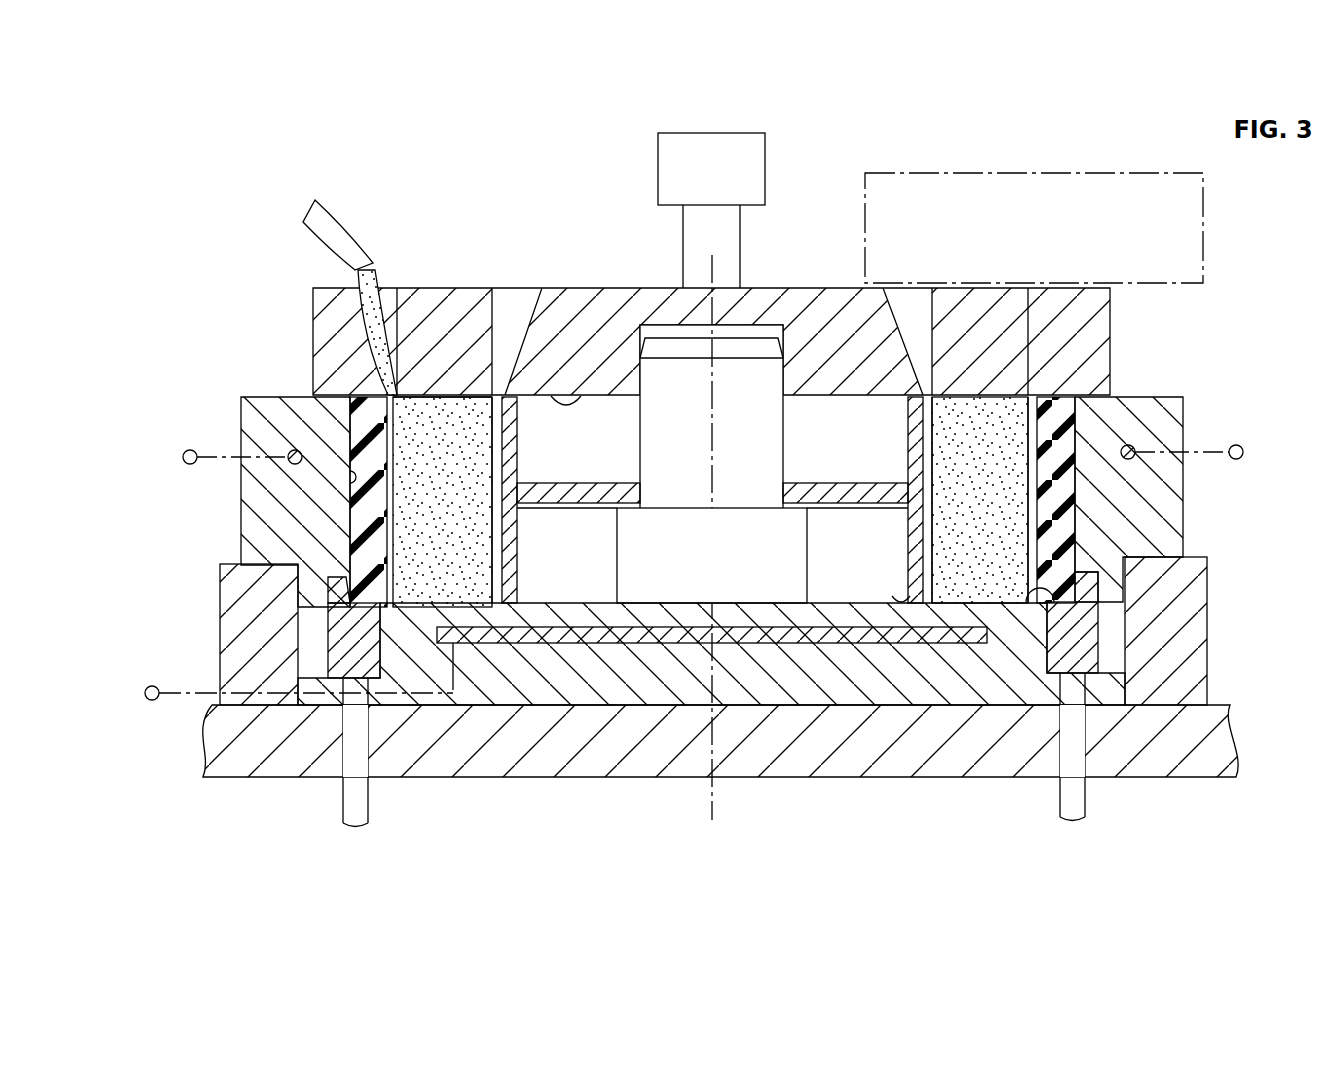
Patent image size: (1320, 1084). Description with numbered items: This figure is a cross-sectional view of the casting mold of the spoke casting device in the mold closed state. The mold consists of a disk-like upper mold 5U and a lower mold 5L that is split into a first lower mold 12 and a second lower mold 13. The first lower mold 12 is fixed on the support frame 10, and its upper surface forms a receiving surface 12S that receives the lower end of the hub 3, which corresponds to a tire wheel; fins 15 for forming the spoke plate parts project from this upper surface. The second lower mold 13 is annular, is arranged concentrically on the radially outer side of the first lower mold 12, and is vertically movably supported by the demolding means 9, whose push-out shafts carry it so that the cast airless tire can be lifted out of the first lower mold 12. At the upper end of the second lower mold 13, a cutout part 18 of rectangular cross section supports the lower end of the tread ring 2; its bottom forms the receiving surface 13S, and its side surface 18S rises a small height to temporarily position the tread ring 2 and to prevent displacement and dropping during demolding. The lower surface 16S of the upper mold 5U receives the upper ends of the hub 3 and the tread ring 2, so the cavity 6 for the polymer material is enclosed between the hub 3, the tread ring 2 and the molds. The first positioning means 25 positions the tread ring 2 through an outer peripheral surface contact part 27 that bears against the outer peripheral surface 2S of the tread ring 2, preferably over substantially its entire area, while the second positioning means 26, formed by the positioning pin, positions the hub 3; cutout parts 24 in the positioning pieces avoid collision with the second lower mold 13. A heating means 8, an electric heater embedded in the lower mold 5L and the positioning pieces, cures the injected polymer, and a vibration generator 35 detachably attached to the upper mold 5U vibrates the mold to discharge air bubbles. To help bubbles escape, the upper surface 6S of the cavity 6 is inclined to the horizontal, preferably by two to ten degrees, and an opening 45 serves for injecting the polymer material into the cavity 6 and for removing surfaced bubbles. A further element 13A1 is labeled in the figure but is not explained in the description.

The tread ring 2 is at (1112, 365).
The outer peripheral surface 2S is at (348, 523).
The hub 3 is at (820, 480).
The upper mold 5U is at (462, 300).
The lower mold 5L is at (1032, 874).
The cavity 6 is at (433, 502).
The upper surface of the cavity 6S is at (441, 396).
The heating means 8 is at (295, 449).
The demolding means 9 is at (1088, 793).
The support frame 10 is at (648, 778).
The first lower mold 12 is at (960, 680).
The receiving surface 12S is at (892, 596).
The second lower mold 13 is at (1035, 597).
The die inner wall 13A1 is at (783, 488).
The receiving surface 13S is at (1003, 607).
The fins 15 is at (372, 594).
The lower surface 16S is at (581, 396).
The cutout part 18 is at (1040, 565).
The side surface 18S is at (1068, 574).
The cutout parts 24 is at (258, 640).
The first positioning means 25 is at (238, 427).
The second positioning means 26 is at (616, 566).
The outer peripheral surface contact part 27 is at (346, 491).
The vibration generator 35 is at (1010, 171).
The opening 45 is at (387, 320).